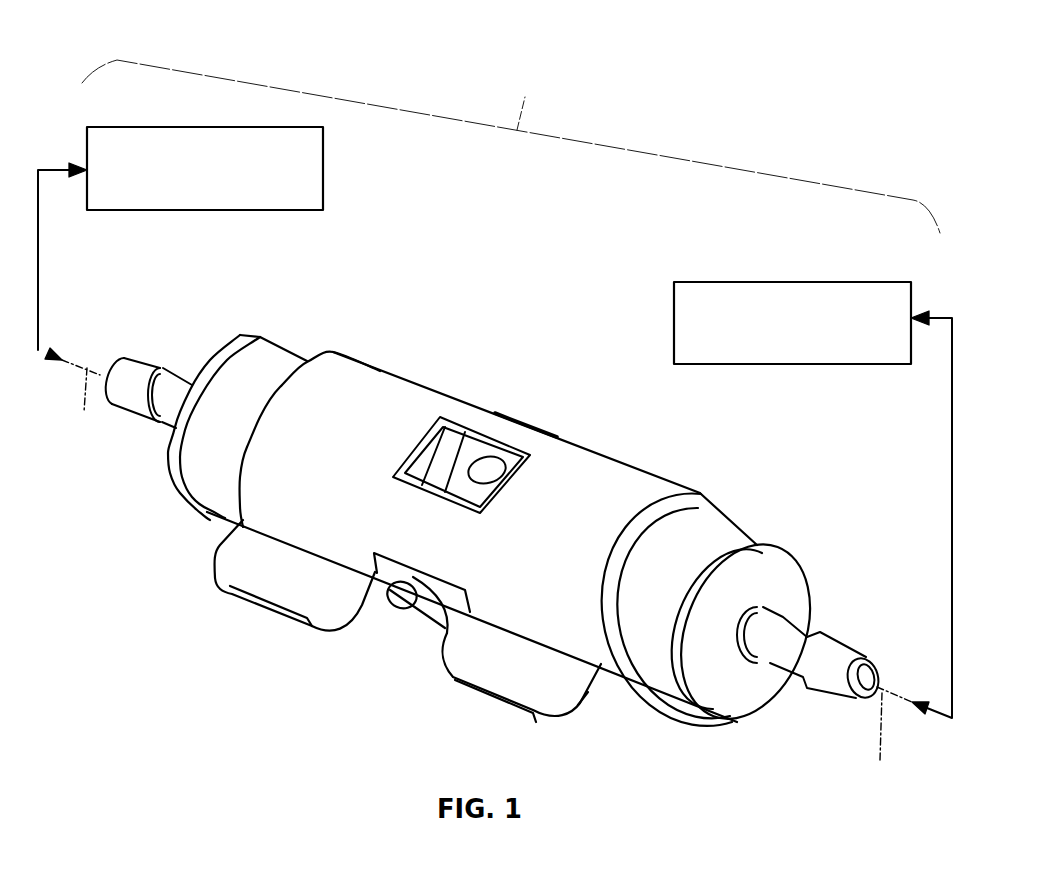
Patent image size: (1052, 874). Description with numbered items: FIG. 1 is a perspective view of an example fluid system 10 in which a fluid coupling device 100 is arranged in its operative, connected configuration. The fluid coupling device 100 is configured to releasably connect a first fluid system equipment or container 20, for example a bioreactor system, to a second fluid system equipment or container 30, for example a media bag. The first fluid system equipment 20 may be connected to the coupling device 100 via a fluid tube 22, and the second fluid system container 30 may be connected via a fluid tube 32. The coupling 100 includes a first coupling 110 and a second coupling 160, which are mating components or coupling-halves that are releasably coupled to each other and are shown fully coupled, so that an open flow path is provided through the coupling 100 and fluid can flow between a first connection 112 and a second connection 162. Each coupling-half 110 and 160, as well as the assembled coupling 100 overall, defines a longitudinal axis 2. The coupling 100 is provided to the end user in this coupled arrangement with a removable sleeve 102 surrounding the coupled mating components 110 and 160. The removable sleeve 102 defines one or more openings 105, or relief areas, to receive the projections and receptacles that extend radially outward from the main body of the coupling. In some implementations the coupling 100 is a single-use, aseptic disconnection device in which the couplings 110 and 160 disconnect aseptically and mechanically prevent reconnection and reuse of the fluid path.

The fluid system 10 is at (537, 88).
The first fluid system equipment or container 20 is at (325, 152).
The fluid tube 22 is at (38, 262).
The second fluid system equipment or container 30 is at (822, 282).
The fluid tube 32 is at (950, 455).
The longitudinal axis 2 is at (78, 416).
The fluid coupling device 100 is at (544, 332).
The removable sleeve 102 is at (606, 470).
The opening 105 is at (413, 442).
The first coupling 110 is at (282, 330).
The first connection 112 is at (147, 360).
The second coupling 160 is at (756, 520).
The second connection 162 is at (845, 645).